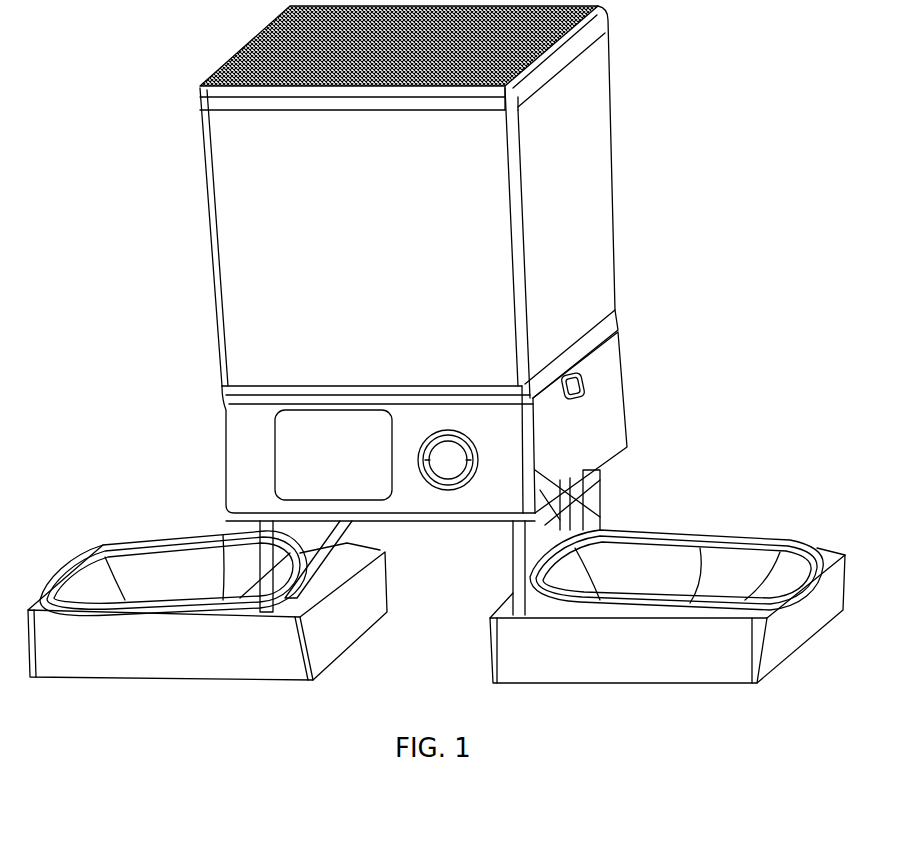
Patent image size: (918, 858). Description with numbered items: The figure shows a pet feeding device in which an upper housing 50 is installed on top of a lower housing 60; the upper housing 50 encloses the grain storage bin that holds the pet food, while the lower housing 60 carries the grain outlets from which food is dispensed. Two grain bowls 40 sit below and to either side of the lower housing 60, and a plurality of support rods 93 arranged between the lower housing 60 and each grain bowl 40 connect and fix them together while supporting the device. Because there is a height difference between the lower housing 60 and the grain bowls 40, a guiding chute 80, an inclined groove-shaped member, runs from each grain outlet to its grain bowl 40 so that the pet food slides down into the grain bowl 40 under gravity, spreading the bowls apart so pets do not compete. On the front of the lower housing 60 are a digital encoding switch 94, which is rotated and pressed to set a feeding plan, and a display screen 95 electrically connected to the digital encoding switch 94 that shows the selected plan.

The upper housing 50 is at (570, 228).
The lower housing 60 is at (595, 407).
The guiding chute 80 is at (600, 517).
The support rod 93 is at (602, 510).
The grain bowl 40 is at (683, 572).
The display screen 95 is at (345, 445).
The digital encoding switch 94 is at (450, 478).